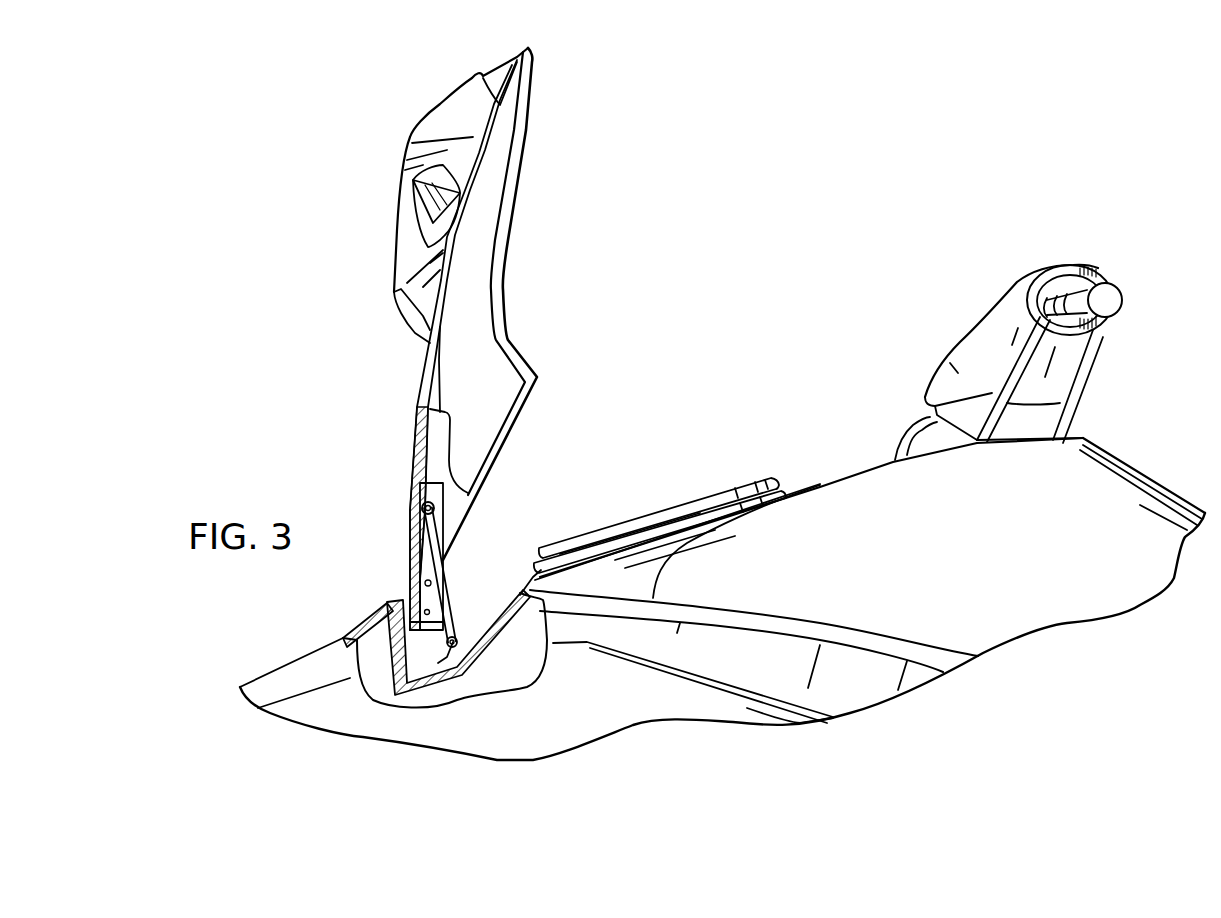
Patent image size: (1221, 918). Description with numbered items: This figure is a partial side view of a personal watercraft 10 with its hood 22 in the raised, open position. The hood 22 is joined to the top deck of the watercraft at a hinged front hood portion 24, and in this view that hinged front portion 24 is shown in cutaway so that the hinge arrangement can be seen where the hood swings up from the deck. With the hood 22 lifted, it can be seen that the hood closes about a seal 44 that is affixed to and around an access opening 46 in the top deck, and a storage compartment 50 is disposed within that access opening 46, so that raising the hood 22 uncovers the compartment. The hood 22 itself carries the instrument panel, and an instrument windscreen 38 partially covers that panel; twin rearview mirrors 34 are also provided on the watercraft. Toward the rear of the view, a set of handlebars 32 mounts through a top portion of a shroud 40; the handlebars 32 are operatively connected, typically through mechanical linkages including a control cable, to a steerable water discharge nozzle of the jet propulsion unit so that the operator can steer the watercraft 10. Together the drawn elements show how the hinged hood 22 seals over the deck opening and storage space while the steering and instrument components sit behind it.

The personal watercraft 10 is at (790, 300).
The hood 22 is at (390, 353).
The hinged front hood portion 24 is at (412, 556).
The handlebars 32 is at (1112, 282).
The rearview mirrors 34 is at (418, 192).
The instrument windscreen 38 is at (393, 257).
The shroud 40 is at (1063, 587).
The seal 44 is at (638, 538).
The access opening 46 is at (700, 484).
The storage compartment 50 is at (586, 535).